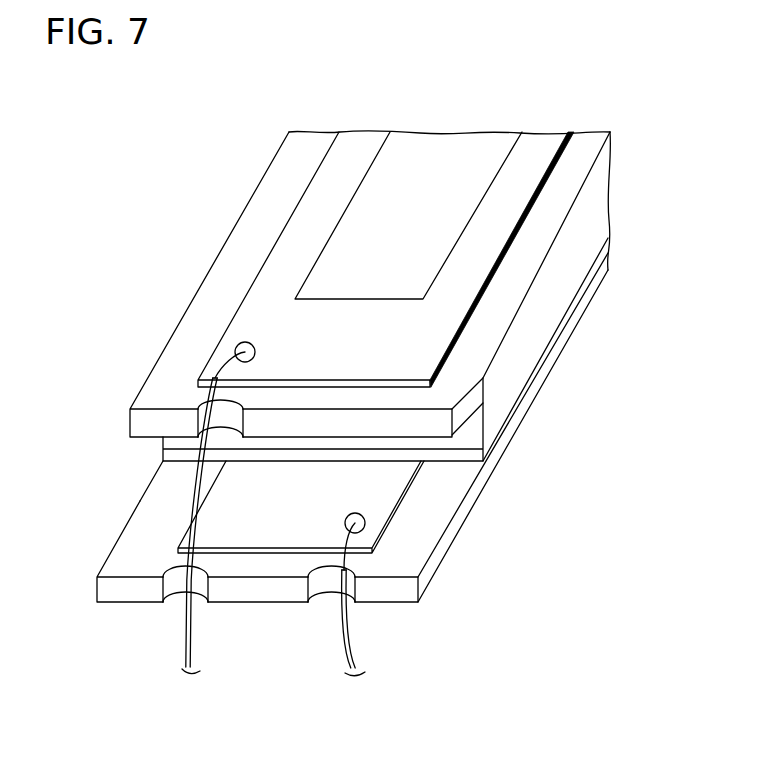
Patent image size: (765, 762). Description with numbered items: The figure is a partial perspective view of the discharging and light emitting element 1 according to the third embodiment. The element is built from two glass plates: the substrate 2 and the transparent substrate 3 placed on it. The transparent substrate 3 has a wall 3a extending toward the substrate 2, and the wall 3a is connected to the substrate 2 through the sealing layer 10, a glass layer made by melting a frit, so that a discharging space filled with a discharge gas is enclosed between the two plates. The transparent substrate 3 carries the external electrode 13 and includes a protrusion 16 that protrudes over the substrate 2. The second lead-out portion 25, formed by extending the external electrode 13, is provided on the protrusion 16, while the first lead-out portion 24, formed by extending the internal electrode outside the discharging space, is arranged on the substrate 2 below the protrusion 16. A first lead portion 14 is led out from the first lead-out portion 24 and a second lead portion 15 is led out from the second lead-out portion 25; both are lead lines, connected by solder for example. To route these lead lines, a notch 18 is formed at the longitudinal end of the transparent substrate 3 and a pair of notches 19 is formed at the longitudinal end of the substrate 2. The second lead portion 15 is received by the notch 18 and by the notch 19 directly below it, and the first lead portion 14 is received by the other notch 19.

The discharging and light emitting element 1 is at (147, 186).
The substrate 2 is at (423, 520).
The transparent substrate 3 is at (227, 282).
The wall 3a is at (595, 202).
The sealing layer 10 is at (570, 310).
The external electrode 13 is at (323, 195).
The first lead portion 14 is at (352, 632).
The second lead portion 15 is at (190, 485).
The protrusion 16 is at (462, 403).
The notch 18 is at (250, 382).
The notches 19 is at (180, 586).
The first lead-out portion 24 is at (276, 530).
The second lead-out portion 25 is at (415, 337).